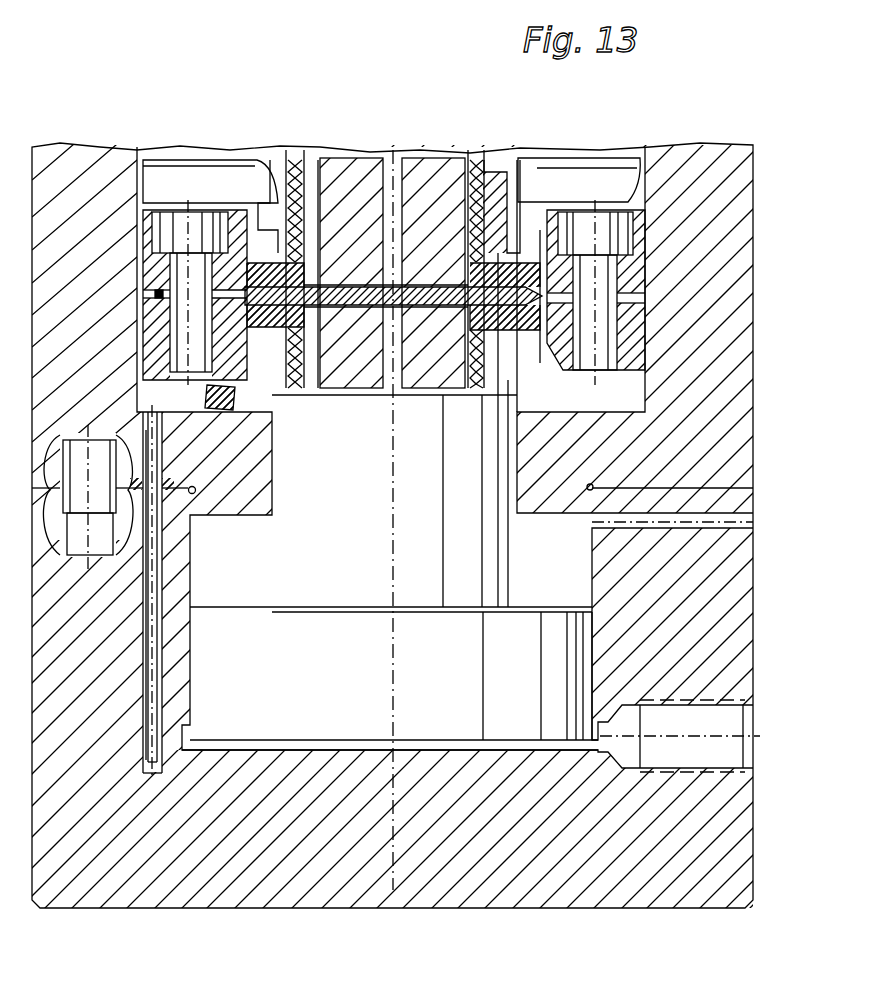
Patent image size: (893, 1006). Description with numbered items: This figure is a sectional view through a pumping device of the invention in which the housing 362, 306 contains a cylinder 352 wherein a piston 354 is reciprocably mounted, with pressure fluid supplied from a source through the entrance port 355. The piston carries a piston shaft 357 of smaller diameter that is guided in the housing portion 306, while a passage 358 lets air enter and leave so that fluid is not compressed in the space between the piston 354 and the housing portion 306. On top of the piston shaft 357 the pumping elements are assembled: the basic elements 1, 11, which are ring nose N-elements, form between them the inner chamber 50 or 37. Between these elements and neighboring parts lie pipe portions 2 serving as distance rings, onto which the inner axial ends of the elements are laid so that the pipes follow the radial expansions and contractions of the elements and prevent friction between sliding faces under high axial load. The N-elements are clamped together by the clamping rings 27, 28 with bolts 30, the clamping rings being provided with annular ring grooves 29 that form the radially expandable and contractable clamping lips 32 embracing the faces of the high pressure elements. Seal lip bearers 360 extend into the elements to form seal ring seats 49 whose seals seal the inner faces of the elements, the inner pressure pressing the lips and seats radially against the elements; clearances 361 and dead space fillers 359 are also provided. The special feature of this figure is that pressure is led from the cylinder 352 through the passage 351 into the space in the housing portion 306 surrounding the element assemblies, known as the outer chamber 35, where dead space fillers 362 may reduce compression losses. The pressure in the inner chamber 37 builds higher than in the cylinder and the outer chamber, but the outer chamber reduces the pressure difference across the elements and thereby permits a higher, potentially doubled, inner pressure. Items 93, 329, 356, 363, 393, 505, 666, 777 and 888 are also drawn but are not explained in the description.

The basic element 1 is at (272, 200).
The pipe portion 2 is at (293, 146).
The basic element 11 is at (278, 400).
The clamping ring 27 is at (162, 200).
The clamping ring 28 is at (630, 343).
The annular ring groove 29 is at (233, 230).
The bolt 30 is at (182, 227).
The clamping lip 32 is at (245, 220).
The outer chamber 35 is at (147, 392).
The inner chamber 37 is at (396, 158).
The seal ring seat 49 is at (340, 158).
The inner chamber 50 is at (392, 400).
The piston seal 93 is at (426, 447).
The housing portion 306 is at (78, 144).
The recess 329 is at (193, 389).
The passage 351 is at (162, 567).
The cylinder 352 is at (217, 748).
The piston 354 is at (290, 695).
The entrance port 355 is at (668, 722).
The upper chamber 356 is at (260, 593).
The piston shaft 357 is at (415, 588).
The passage 358 is at (612, 527).
The dead space filler 359 is at (365, 200).
The seal lip bearer 360 is at (430, 200).
The clearance 361 is at (448, 147).
The housing 362 is at (112, 145).
The plug 363 is at (95, 533).
The shoulder 393 is at (422, 398).
The guide sleeve 505 is at (384, 66).
The body 666 is at (78, 144).
The bore 777 is at (160, 592).
The channel 888 is at (642, 535).